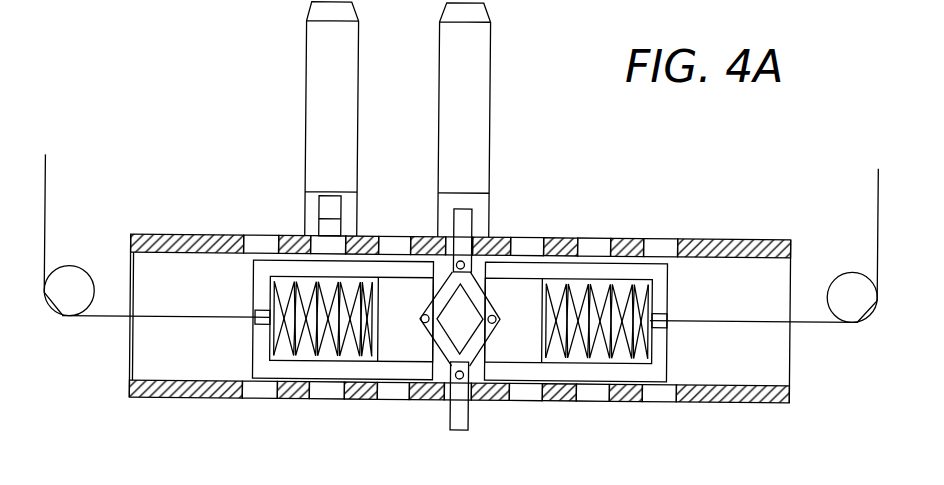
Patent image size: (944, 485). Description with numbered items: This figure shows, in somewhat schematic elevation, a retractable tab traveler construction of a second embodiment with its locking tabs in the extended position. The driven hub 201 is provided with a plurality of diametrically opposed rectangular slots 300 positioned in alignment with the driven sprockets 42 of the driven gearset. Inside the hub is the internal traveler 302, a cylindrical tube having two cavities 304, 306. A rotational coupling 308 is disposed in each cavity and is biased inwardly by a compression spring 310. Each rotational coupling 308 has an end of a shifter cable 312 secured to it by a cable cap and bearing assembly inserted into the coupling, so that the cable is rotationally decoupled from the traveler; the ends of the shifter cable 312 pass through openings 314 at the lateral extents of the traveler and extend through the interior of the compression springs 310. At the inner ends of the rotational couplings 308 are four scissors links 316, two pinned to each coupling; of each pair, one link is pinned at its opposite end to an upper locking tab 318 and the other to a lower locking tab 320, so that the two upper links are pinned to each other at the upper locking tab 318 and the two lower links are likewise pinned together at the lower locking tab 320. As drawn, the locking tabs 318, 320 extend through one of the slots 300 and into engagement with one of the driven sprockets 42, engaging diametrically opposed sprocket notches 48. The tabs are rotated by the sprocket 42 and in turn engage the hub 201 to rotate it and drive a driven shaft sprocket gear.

The driven sprocket 42 is at (312, 83).
The sprocket notch 48 is at (445, 193).
The driven hub 201 is at (790, 403).
The rectangular slot 300 is at (262, 240).
The internal traveler 302 is at (252, 337).
The cavity 304 is at (312, 362).
The cavity 306 is at (590, 285).
The rotational coupling 308 is at (397, 365).
The compression spring 310 is at (627, 352).
The shifter cable 312 is at (108, 316).
The opening 314 is at (262, 310).
The scissors link 316 is at (437, 287).
The upper locking tab 318 is at (462, 207).
The lower locking tab 320 is at (467, 418).